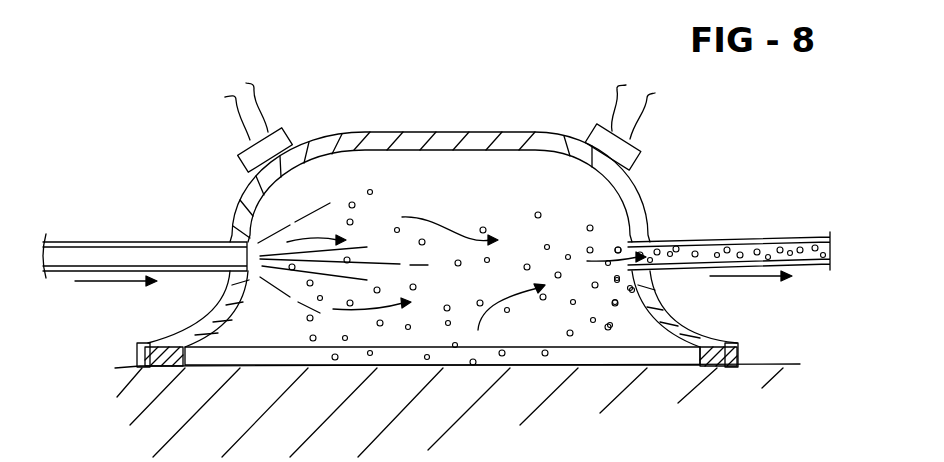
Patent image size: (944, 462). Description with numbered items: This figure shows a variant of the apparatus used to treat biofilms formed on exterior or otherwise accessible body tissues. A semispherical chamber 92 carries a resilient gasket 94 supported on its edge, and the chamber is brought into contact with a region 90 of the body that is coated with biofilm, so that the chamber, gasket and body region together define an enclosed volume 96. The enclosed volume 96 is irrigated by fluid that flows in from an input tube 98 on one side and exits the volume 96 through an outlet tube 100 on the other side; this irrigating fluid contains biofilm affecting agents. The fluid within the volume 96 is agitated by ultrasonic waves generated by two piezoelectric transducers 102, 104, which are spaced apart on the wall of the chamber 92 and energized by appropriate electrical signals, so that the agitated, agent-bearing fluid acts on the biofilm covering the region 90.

The region of the body 90 is at (460, 366).
The semispherical chamber 92 is at (525, 135).
The resilient gasket 94 is at (140, 365).
The enclosed volume 96 is at (509, 215).
The input tube 98 is at (145, 243).
The outlet tube 100 is at (742, 240).
The piezoelectric transducer 102 is at (247, 163).
The piezoelectric transducer 104 is at (625, 160).